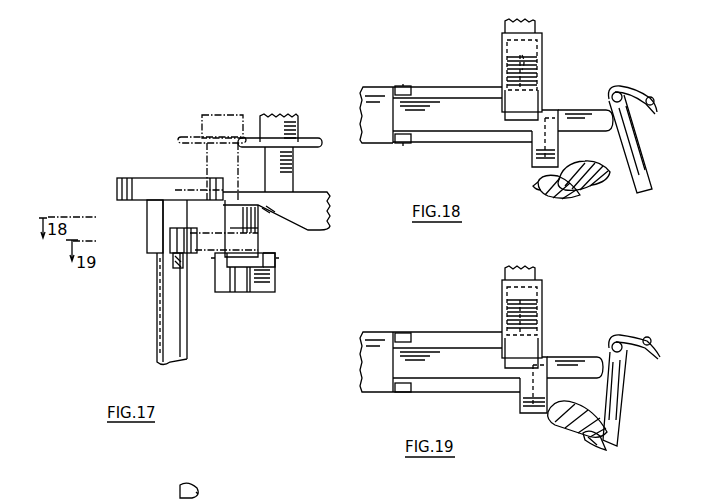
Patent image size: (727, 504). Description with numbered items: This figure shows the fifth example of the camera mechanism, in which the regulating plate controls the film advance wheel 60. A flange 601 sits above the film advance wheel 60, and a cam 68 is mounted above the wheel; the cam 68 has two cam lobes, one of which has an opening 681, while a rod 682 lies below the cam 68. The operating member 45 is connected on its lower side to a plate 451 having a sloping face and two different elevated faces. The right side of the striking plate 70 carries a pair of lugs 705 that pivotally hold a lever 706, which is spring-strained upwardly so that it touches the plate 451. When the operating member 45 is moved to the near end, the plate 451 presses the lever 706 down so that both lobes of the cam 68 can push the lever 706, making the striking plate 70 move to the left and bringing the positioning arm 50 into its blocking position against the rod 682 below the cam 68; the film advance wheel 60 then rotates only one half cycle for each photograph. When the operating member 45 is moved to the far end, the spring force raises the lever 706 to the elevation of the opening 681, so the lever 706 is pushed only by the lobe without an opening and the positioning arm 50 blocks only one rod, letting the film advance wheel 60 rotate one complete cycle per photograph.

In FIG. 17, the operating member 45 is at (285, 96).
In FIG. 18, the operating member 45 is at (503, 66).
In FIG. 19, the operating member 45 is at (503, 318).
In FIG. 17, the plate 451 is at (322, 222).
In FIG. 18, the plate 451 is at (515, 24).
In FIG. 19, the plate 451 is at (515, 268).
In FIG. 18, the positioning arm 50 is at (639, 186).
In FIG. 19, the positioning arm 50 is at (605, 440).
In FIG. 17, the film advance wheel 60 is at (168, 323).
In FIG. 17, the flange 601 is at (153, 190).
In FIG. 17, the cam 68 is at (153, 244).
In FIG. 18, the cam 68 is at (603, 160).
In FIG. 19, the cam 68 is at (553, 413).
In FIG. 17, the opening 681 is at (243, 232).
In FIG. 18, the opening 681 is at (558, 195).
In FIG. 17, the rod 682 is at (173, 262).
In FIG. 18, the rod 682 is at (543, 182).
In FIG. 19, the rod 682 is at (598, 450).
In FIG. 17, the striking plate 70 is at (260, 288).
In FIG. 18, the striking plate 70 is at (385, 134).
In FIG. 19, the striking plate 70 is at (372, 380).
In FIG. 17, the lugs 705 is at (275, 259).
In FIG. 18, the lugs 705 is at (395, 87).
In FIG. 19, the lugs 705 is at (410, 330).
In FIG. 17, the lever 706 is at (260, 242).
In FIG. 18, the lever 706 is at (540, 152).
In FIG. 19, the lever 706 is at (524, 405).